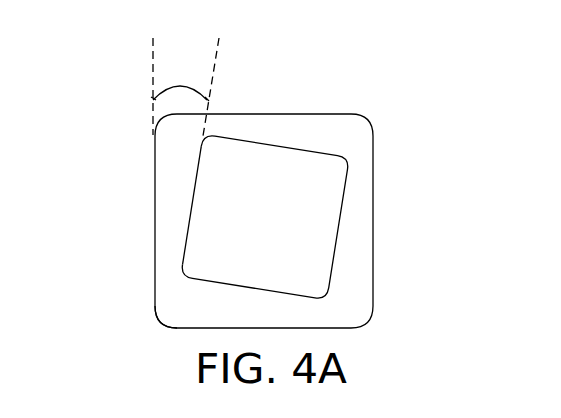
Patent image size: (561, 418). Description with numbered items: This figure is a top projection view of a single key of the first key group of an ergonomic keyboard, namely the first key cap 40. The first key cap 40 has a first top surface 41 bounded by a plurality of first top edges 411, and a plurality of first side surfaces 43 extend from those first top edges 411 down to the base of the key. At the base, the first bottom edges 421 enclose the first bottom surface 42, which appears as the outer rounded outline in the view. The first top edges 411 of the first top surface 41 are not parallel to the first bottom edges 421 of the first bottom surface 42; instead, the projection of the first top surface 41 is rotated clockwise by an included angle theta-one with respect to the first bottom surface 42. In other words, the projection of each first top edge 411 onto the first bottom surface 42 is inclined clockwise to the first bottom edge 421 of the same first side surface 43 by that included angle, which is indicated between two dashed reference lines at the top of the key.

The first key cap 40 is at (100, 23).
The first top surface 41 is at (248, 156).
The first top edges 411 is at (186, 241).
The first bottom surface 42 is at (373, 225).
The first bottom edges 421 is at (155, 183).
The first side surfaces 43 is at (172, 311).